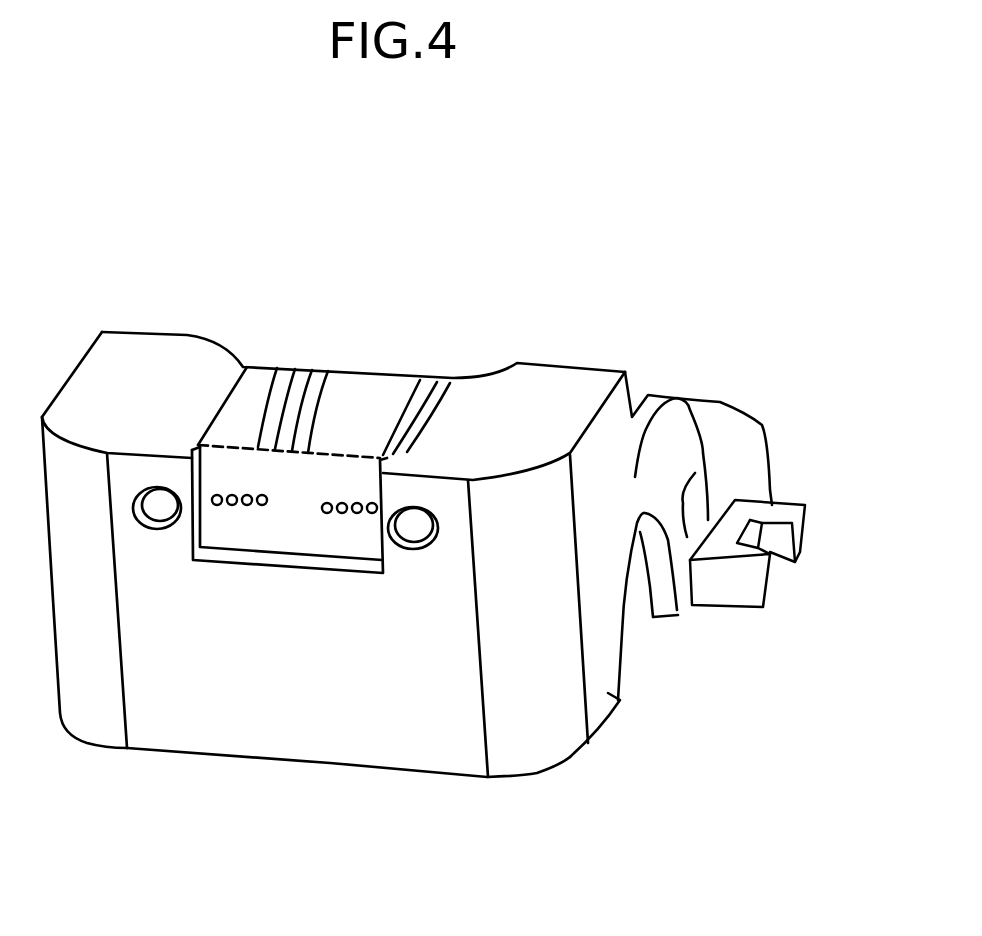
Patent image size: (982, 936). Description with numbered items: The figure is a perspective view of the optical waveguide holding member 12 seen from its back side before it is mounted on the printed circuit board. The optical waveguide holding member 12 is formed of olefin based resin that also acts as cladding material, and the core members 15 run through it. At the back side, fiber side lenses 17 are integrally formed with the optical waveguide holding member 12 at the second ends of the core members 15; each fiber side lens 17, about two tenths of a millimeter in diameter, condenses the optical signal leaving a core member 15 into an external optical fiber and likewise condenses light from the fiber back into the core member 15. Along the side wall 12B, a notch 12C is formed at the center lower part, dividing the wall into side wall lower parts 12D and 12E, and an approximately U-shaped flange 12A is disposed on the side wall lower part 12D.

The optical waveguide holding member 12 is at (633, 257).
The core member 15 is at (363, 373).
The fiber side lens 17 is at (236, 493).
The flange 12A is at (780, 507).
The side wall 12B is at (677, 400).
The notch 12C is at (662, 597).
The side wall lower part 12D is at (690, 477).
The side wall lower part 12E is at (620, 700).